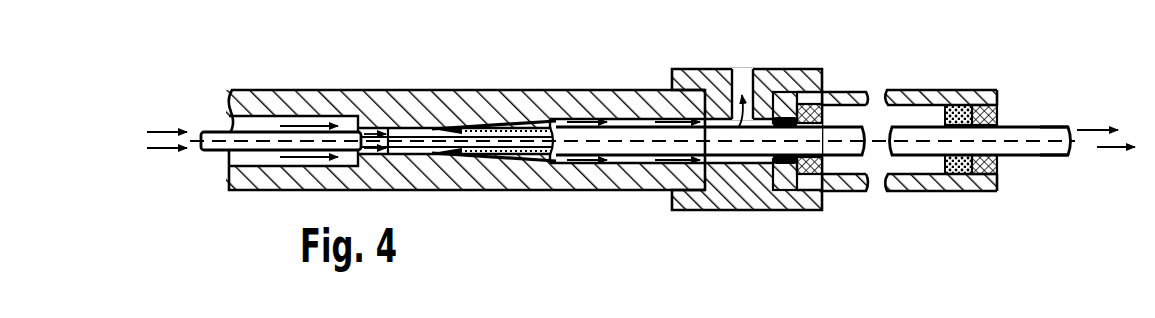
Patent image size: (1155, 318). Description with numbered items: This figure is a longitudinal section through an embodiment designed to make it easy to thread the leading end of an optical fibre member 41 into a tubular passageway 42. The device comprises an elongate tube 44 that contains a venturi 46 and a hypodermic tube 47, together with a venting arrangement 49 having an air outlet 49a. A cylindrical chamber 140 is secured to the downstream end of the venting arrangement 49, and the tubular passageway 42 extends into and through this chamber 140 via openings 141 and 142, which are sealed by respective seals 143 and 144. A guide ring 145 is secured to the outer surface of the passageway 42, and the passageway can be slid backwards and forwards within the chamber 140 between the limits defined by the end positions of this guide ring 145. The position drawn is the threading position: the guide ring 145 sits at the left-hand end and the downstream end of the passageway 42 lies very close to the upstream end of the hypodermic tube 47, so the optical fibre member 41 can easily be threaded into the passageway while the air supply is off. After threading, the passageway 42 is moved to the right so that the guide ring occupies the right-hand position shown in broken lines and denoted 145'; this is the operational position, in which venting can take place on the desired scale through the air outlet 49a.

The optical fibre member 41 is at (1085, 138).
The tubular passageway 42 is at (1047, 152).
The elongate tube 44 is at (570, 182).
The venturi 46 is at (388, 155).
The hypodermic tube 47 is at (271, 152).
The venting arrangement 49 is at (790, 62).
The air outlet 49a is at (722, 68).
The cylindrical chamber 140 is at (915, 90).
The opening 141 is at (773, 160).
The opening 142 is at (1000, 168).
The seal 143 is at (784, 164).
The seal 144 is at (973, 175).
The guide ring 145 is at (852, 111).
The guide ring in operational position 145' is at (989, 103).